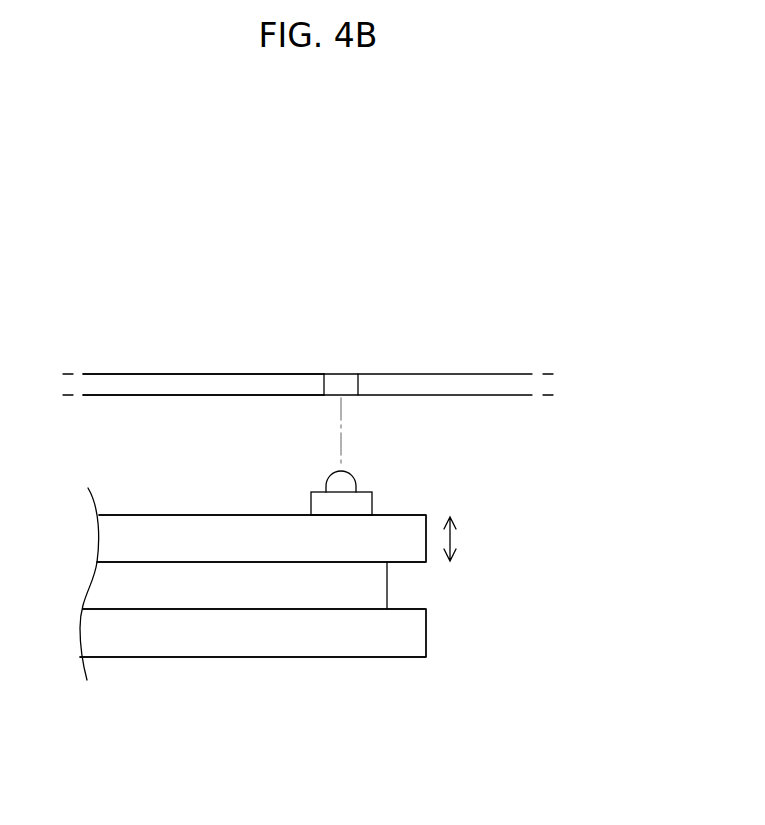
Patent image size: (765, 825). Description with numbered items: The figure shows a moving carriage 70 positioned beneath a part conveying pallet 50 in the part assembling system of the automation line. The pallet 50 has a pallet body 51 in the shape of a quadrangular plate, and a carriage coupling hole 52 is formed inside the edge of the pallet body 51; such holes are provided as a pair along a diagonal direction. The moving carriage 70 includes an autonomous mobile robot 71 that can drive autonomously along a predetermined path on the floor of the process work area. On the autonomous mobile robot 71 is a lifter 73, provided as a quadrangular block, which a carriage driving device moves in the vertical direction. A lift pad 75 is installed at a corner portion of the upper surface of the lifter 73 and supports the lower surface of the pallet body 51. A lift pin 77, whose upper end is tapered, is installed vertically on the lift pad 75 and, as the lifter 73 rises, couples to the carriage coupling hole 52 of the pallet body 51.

The part conveying pallet 50 is at (428, 369).
The pallet body 51 is at (231, 383).
The carriage coupling hole 52 is at (341, 380).
The moving carriage 70 is at (398, 482).
The autonomous mobile robot 71 is at (338, 593).
The lifter 73 is at (255, 540).
The lift pad 75 is at (318, 506).
The lift pin 77 is at (328, 481).